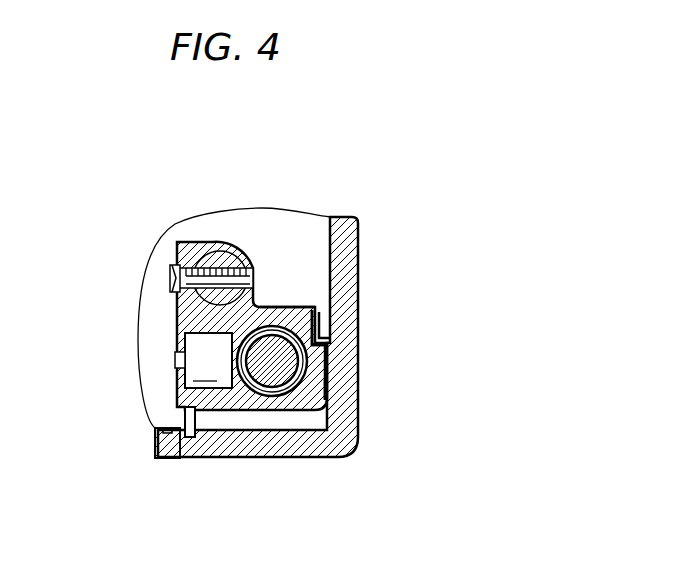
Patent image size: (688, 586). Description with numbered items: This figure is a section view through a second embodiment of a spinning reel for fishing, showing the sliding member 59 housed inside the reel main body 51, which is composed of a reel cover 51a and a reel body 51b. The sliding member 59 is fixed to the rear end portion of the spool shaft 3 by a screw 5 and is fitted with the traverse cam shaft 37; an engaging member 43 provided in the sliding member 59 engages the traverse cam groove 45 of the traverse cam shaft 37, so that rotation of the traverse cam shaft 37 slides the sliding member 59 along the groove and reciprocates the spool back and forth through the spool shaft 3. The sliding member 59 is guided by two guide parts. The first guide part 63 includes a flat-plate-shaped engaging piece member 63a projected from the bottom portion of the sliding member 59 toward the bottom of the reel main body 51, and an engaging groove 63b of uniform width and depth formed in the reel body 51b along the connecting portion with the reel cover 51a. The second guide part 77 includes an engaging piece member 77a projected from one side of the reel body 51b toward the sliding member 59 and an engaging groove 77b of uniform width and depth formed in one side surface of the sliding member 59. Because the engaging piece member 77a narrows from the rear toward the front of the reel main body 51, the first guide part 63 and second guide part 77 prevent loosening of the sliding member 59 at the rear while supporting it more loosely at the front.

The spool shaft 3 is at (218, 243).
The screw 5 is at (180, 274).
The sliding member 59 is at (287, 305).
The reel main body 51 is at (283, 354).
The reel cover 51a is at (167, 458).
The reel body 51b is at (352, 268).
The engaging member 43 is at (188, 352).
The traverse cam shaft 37 is at (270, 380).
The traverse cam groove 45 is at (305, 420).
The second guide part 77 is at (407, 360).
The engaging piece member 77a is at (323, 328).
The engaging groove 77b is at (337, 372).
The first guide part 63 is at (122, 472).
The engaging piece member 63a is at (185, 420).
The engaging groove 63b is at (212, 425).